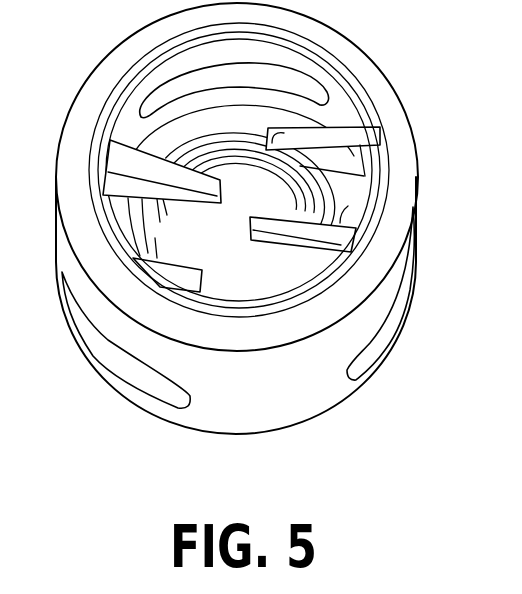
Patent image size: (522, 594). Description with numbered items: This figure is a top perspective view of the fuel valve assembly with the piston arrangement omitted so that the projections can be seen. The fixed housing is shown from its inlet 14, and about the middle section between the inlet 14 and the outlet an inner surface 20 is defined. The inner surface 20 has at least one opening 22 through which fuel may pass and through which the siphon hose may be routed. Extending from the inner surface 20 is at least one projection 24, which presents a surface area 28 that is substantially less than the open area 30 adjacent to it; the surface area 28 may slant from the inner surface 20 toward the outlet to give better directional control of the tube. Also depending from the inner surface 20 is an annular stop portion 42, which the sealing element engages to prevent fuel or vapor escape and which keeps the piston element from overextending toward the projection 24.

The inlet 14 is at (325, 82).
The inner surface 20 is at (158, 72).
The opening 22 is at (118, 362).
The projection 24 is at (281, 179).
The surface area 28 is at (277, 159).
The open area 30 is at (251, 289).
The annular stop portion 42 is at (195, 150).